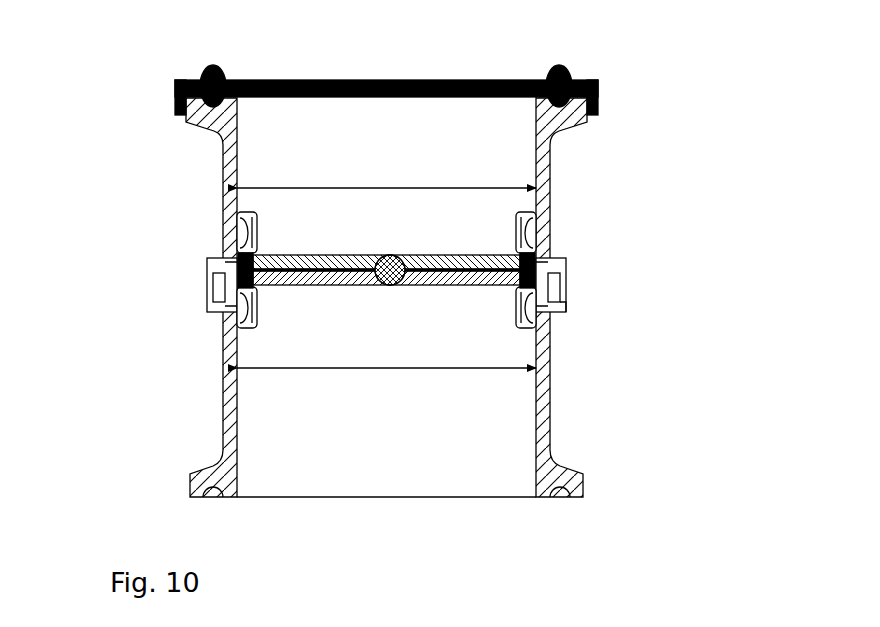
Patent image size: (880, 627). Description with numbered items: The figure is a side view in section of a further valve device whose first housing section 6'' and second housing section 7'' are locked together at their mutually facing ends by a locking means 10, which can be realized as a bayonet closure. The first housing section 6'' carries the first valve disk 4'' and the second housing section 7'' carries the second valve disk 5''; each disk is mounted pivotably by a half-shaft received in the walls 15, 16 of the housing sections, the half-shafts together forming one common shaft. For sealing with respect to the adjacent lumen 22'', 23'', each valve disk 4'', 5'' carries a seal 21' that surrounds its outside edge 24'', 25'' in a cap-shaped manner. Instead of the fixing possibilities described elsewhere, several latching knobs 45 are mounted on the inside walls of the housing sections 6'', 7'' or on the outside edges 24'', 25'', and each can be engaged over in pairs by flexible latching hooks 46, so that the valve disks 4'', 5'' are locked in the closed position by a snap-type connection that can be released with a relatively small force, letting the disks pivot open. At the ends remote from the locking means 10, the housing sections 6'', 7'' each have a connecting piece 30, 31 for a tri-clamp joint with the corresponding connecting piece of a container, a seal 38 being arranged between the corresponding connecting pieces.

The locking means 10 is at (382, 297).
The first housing section 6'' is at (198, 297).
The second housing section 7'' is at (194, 406).
The first valve disk 4'' is at (610, 297).
The second valve disk 5'' is at (609, 338).
The connecting piece 30 is at (178, 92).
The connecting piece 31 is at (200, 476).
The seal 38 is at (572, 75).
The lumen 22'' is at (315, 155).
The lumen 23'' is at (322, 355).
The seal 21' is at (156, 249).
The wall 15 is at (235, 262).
The wall 16 is at (566, 272).
The outside edge 24'' is at (635, 263).
The outside edge 25'' is at (647, 289).
The latching hook 46 is at (235, 322).
The latching knob 45 is at (240, 243).